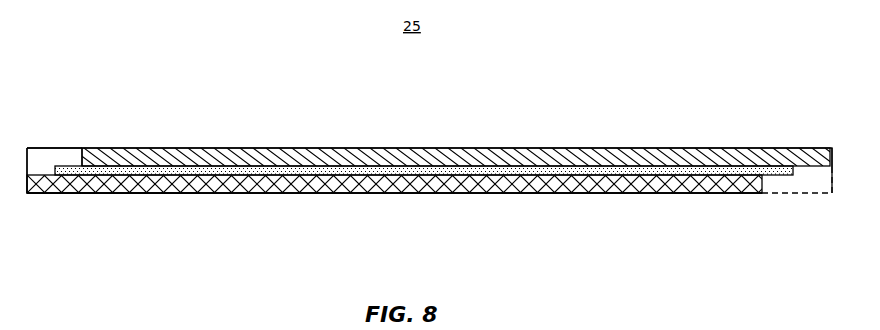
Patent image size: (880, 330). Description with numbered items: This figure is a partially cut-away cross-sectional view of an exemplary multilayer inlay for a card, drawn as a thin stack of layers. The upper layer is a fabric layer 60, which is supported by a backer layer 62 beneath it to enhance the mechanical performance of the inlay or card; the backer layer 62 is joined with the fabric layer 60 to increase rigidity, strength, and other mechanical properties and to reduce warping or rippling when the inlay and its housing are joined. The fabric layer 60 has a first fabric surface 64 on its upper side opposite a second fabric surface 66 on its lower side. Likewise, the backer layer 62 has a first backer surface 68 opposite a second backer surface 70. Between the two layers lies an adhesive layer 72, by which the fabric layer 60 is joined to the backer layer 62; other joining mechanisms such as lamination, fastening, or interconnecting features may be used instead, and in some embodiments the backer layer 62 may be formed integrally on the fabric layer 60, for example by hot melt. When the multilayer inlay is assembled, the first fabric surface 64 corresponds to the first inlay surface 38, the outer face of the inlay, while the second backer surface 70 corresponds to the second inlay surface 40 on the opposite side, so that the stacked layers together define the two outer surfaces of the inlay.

The first inlay surface 38 is at (327, 130).
The second inlay surface 40 is at (182, 210).
The fabric layer 60 is at (500, 148).
The backer layer 62 is at (542, 180).
The first fabric surface 64 is at (236, 148).
The second fabric surface 66 is at (807, 168).
The first backer surface 68 is at (41, 175).
The second backer surface 70 is at (273, 193).
The adhesive layer 72 is at (780, 177).